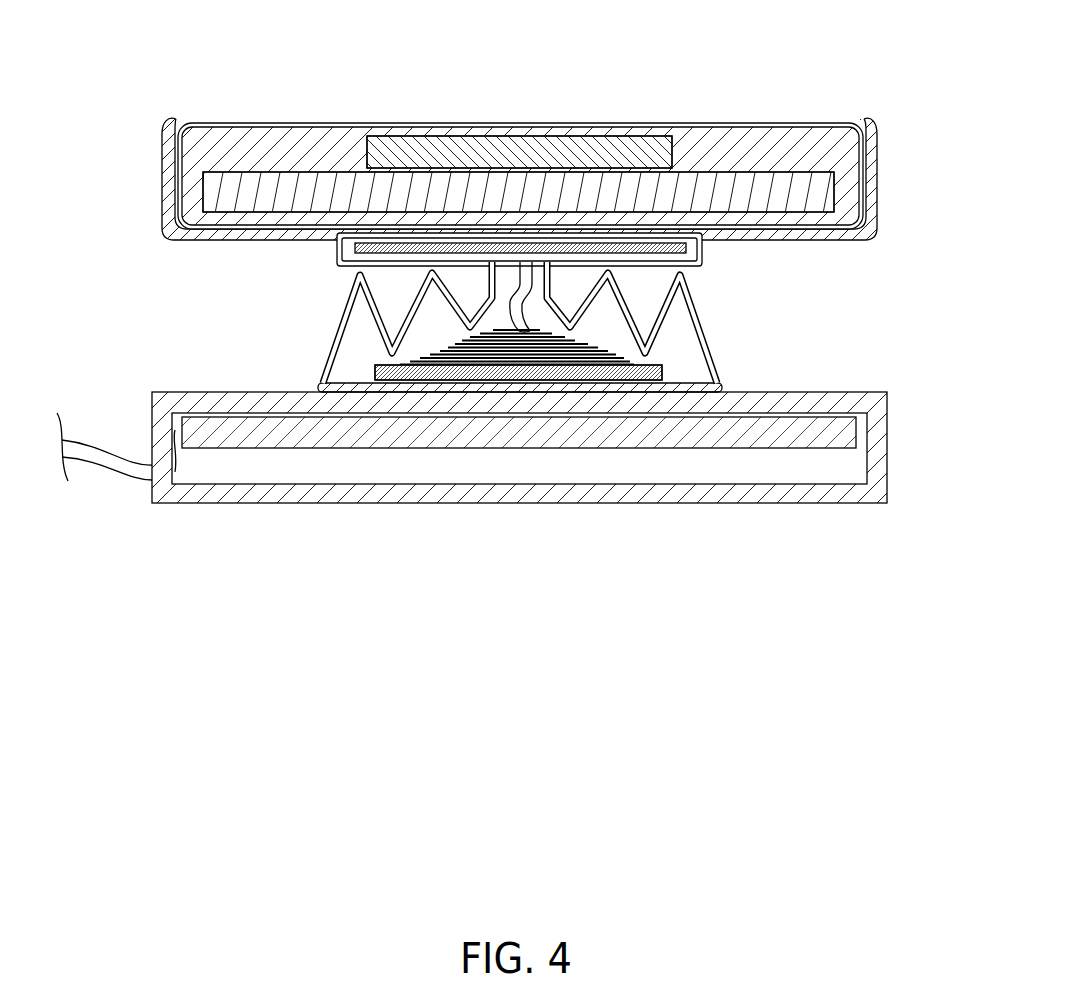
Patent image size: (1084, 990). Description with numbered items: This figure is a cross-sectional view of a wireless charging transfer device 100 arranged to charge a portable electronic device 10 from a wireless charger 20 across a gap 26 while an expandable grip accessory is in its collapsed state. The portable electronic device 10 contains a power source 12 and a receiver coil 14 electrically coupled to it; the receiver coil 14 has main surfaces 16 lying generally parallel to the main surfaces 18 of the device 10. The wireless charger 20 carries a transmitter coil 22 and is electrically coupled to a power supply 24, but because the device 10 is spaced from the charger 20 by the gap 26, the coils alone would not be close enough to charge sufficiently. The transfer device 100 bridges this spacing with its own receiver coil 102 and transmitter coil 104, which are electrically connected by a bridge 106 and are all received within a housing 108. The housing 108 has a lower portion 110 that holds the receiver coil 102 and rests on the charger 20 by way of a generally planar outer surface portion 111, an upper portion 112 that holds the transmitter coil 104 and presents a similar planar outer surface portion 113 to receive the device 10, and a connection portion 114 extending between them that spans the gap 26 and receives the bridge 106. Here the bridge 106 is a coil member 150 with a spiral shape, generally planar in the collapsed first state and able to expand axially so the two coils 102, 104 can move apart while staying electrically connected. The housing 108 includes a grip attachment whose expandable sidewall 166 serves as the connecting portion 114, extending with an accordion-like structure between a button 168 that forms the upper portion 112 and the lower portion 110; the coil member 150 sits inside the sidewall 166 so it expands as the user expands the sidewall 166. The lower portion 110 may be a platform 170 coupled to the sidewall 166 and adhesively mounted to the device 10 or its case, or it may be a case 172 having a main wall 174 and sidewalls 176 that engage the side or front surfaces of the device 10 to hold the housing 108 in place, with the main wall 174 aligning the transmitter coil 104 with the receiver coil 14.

The wireless charging transfer device 100 is at (177, 80).
The portable electronic device 10 is at (833, 123).
The power source 12 is at (378, 137).
The receiver coil 14 is at (597, 188).
The main surfaces 16 is at (688, 170).
The main surfaces 18 is at (797, 225).
The wireless charger 20 is at (405, 503).
The transmitter coil 22 is at (617, 440).
The power supply 24 is at (80, 470).
The gap 26 is at (872, 321).
The receiver coil 102 is at (543, 372).
The transmitter coil 104 is at (500, 243).
The bridge 106 is at (582, 333).
The housing 108 is at (877, 190).
The lower portion 110 is at (320, 388).
The planar outer surface portion 111 is at (340, 390).
The upper portion 112 is at (333, 243).
The planar outer surface portion 113 is at (203, 233).
The connection portion 114 is at (695, 306).
The coil member 150 is at (410, 357).
The expandable sidewall 166 is at (340, 313).
The button 168 is at (722, 384).
The platform 170 is at (700, 267).
The case 172 is at (168, 177).
The main wall 174 is at (850, 242).
The sidewalls 176 is at (875, 140).